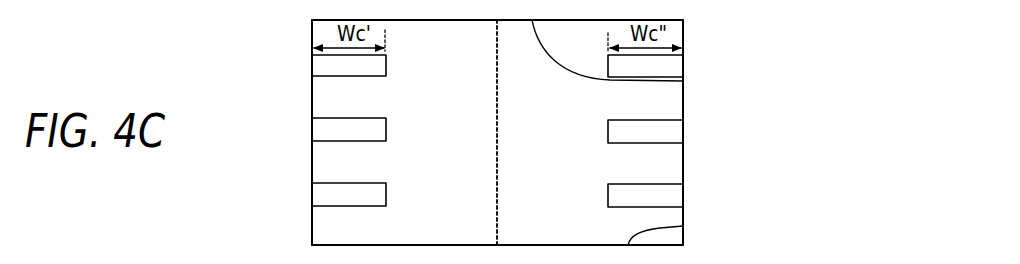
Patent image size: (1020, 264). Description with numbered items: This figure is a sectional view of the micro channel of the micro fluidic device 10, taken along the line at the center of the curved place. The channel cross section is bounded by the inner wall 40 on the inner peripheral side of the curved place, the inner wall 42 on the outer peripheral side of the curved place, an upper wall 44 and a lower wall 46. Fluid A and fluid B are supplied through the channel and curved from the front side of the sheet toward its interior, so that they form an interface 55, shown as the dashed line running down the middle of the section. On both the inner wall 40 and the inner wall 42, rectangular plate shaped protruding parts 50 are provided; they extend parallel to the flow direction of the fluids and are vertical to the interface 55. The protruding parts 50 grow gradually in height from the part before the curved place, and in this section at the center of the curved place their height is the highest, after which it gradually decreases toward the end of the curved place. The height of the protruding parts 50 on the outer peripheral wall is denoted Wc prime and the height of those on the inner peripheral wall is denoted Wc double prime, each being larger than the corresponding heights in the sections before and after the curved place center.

The micro fluidic device 10 is at (284, 42).
The inner wall in the inner peripheral side 40 is at (676, 163).
The inner wall in the outer peripheral side 42 is at (316, 160).
The upper wall 44 is at (683, 81).
The lower wall 46 is at (683, 226).
The protruding parts 50 is at (332, 66).
The interface 55 is at (497, 112).
The fluid A is at (340, 103).
The fluid B is at (648, 103).